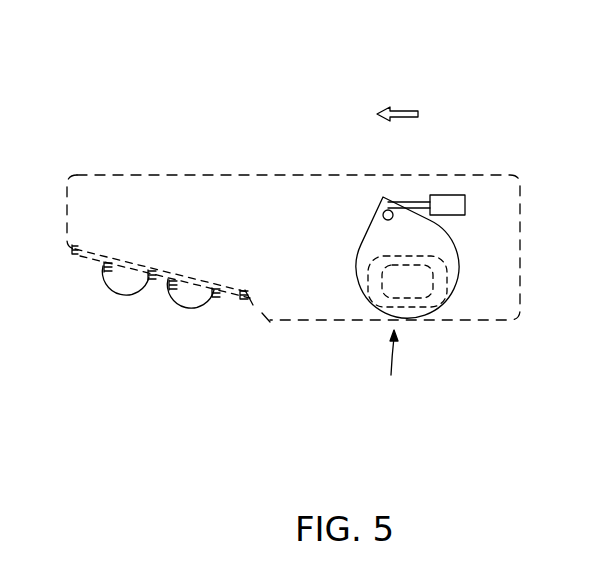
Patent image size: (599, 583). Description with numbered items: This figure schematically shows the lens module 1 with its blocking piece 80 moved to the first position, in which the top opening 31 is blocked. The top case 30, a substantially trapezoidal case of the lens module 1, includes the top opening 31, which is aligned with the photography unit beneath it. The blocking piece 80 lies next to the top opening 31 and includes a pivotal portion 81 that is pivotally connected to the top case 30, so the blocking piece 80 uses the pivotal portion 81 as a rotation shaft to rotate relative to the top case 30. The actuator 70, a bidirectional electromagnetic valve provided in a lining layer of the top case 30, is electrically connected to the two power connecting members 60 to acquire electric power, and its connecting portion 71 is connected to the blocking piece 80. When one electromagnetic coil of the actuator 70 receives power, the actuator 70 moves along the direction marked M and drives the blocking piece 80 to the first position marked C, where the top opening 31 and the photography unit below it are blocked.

The lens module 1 is at (48, 85).
The top case 30 is at (172, 185).
The top opening 31 is at (372, 297).
The power connecting members 60 is at (122, 284).
The actuator 70 is at (446, 200).
The connecting portion 71 is at (411, 200).
The blocking piece 80 is at (367, 247).
The pivotal portion 81 is at (383, 215).